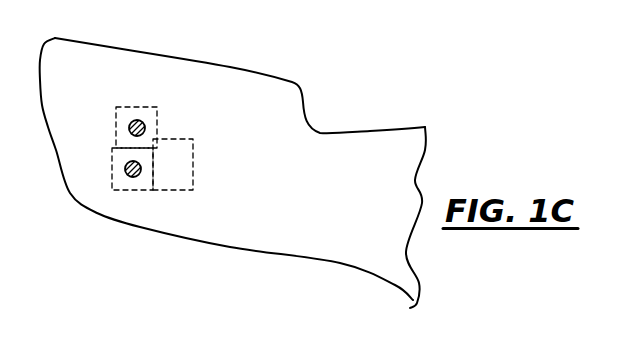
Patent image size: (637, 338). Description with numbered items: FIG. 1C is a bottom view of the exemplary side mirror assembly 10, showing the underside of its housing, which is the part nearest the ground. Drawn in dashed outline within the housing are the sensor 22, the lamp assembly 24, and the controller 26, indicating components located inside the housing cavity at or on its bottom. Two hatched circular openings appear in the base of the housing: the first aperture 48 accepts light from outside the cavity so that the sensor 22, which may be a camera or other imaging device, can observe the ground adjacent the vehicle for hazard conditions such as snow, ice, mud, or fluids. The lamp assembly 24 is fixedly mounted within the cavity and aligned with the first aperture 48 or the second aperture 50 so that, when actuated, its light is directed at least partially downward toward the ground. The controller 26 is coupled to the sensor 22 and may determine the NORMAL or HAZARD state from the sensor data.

The garment body / wearable article 10 is at (136, 229).
The sensor 22 is at (137, 190).
The lamp assembly 24 is at (138, 107).
The controller 26 is at (186, 139).
The first aperture 48 is at (125, 169).
The second aperture 50 is at (129, 127).